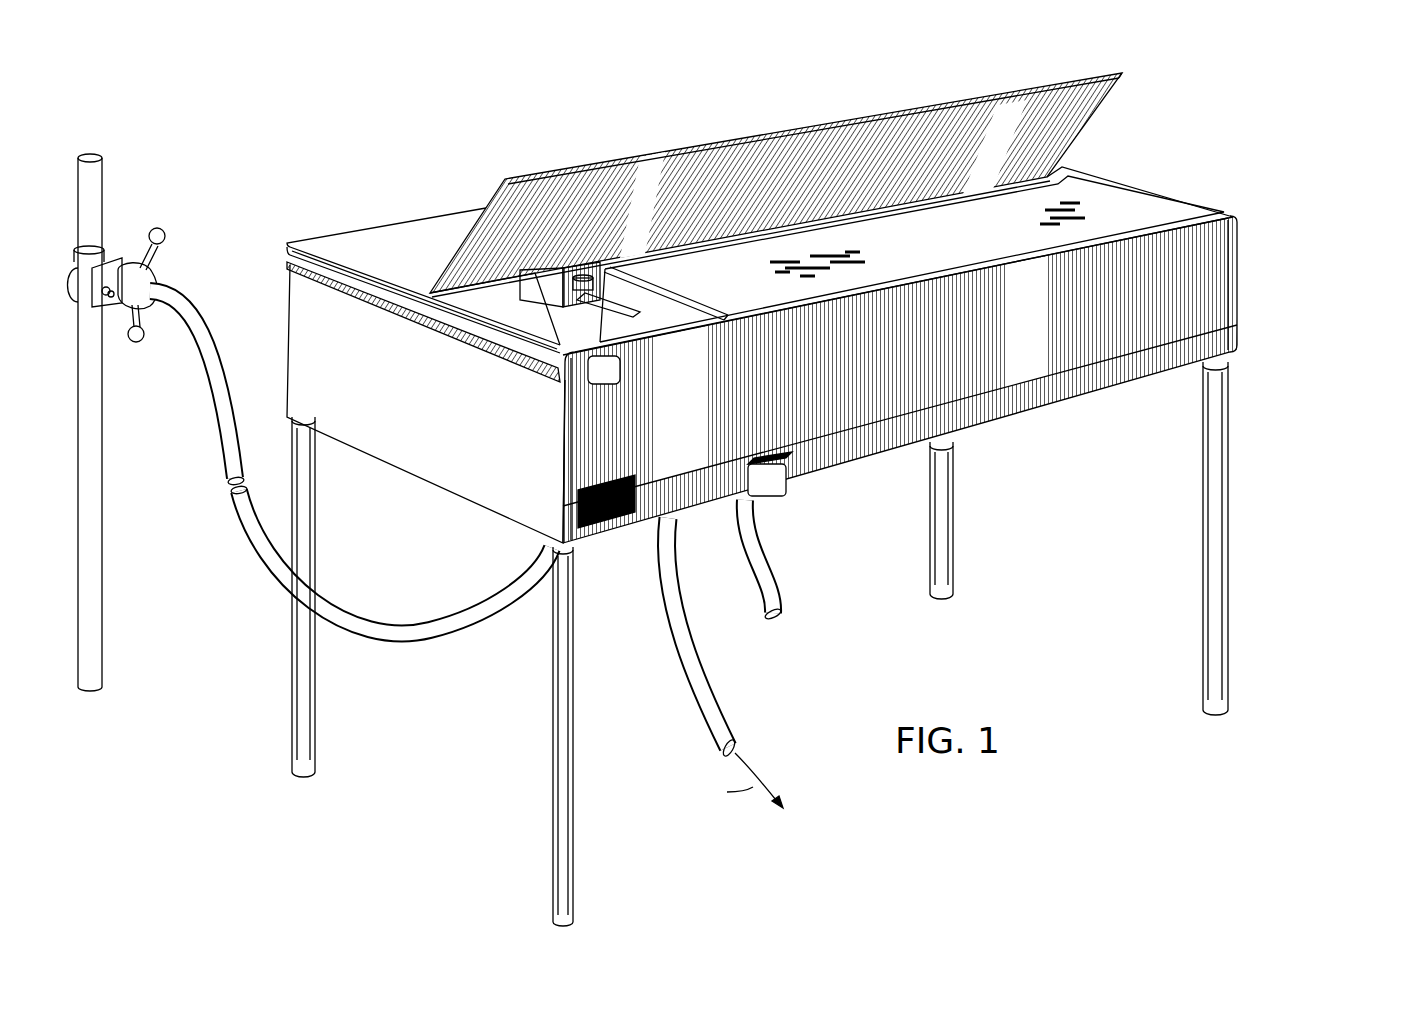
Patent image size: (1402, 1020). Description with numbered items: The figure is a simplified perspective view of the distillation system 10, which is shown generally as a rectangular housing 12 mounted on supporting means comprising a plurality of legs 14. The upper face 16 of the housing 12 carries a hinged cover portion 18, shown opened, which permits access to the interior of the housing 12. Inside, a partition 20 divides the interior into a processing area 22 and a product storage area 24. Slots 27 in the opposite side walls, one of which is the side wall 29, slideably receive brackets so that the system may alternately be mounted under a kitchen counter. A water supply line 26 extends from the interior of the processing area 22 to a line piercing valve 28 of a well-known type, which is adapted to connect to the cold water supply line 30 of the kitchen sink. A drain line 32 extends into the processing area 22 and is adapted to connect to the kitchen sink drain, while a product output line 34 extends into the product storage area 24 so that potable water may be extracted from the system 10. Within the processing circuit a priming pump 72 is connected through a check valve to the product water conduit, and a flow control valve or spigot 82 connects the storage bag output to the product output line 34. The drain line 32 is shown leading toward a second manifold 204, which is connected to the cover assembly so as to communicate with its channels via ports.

The distillation system 10 is at (803, 499).
The housing 12 is at (1188, 272).
The legs 14 is at (297, 650).
The upper face 16 is at (437, 232).
The hinged cover portion 18 is at (628, 186).
The partition 20 is at (662, 300).
The processing area 22 is at (552, 317).
The product storage area 24 is at (1068, 192).
The water supply line 26 is at (415, 620).
The slots 27 is at (395, 308).
The line piercing valve 28 is at (147, 290).
The side wall 29 is at (418, 429).
The cold water supply line 30 is at (97, 203).
The drain line 32 is at (690, 665).
The product output line 34 is at (772, 585).
The priming pump 72 is at (620, 530).
The flow control valve or spigot 82 is at (784, 482).
The second manifold 204 is at (709, 800).